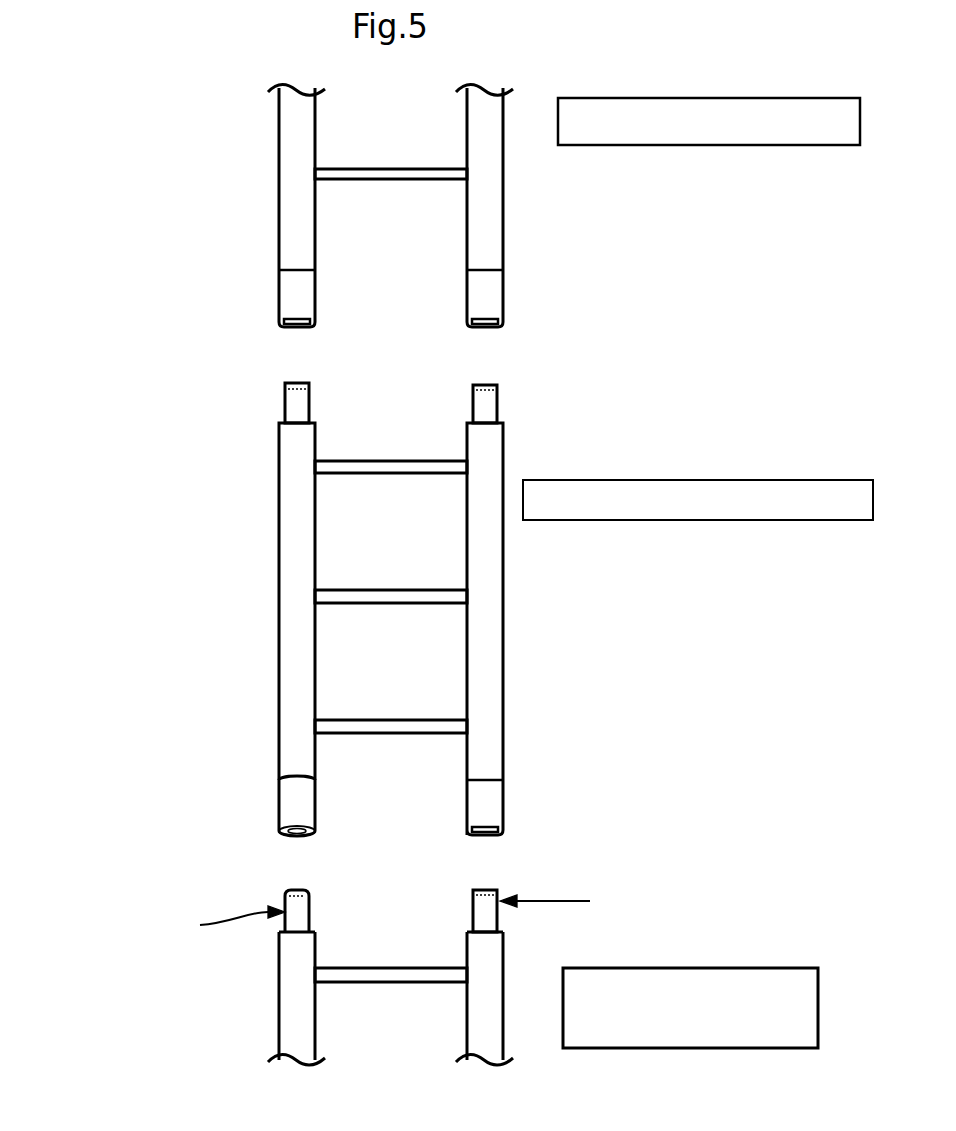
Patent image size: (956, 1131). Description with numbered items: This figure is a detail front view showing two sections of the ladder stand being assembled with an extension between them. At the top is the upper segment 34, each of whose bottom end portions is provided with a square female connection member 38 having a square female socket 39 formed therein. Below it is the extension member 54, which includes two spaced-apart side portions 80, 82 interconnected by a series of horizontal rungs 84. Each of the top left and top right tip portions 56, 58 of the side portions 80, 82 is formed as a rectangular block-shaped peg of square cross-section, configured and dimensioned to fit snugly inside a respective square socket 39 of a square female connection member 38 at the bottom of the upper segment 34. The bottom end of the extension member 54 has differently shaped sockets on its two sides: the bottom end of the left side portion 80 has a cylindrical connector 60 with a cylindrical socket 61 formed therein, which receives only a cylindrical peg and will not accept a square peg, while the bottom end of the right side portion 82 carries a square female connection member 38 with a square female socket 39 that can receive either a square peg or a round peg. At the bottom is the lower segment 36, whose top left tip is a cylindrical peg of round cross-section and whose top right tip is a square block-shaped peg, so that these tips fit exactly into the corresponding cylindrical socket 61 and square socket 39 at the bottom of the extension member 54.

The upper segment 34 is at (262, 165).
The lower segment 36 is at (262, 985).
The square female connection member 38 is at (310, 302).
The square female socket 39 is at (490, 838).
The extension member 54 is at (459, 590).
The top left tip portion 56 is at (285, 397).
The top right tip portion 58 is at (497, 386).
The cylindrical connector 60 is at (180, 800).
The cylindrical socket 61 is at (293, 840).
The left side portion 80 is at (279, 670).
The right side portion 82 is at (503, 655).
The horizontal rungs 84 is at (402, 474).